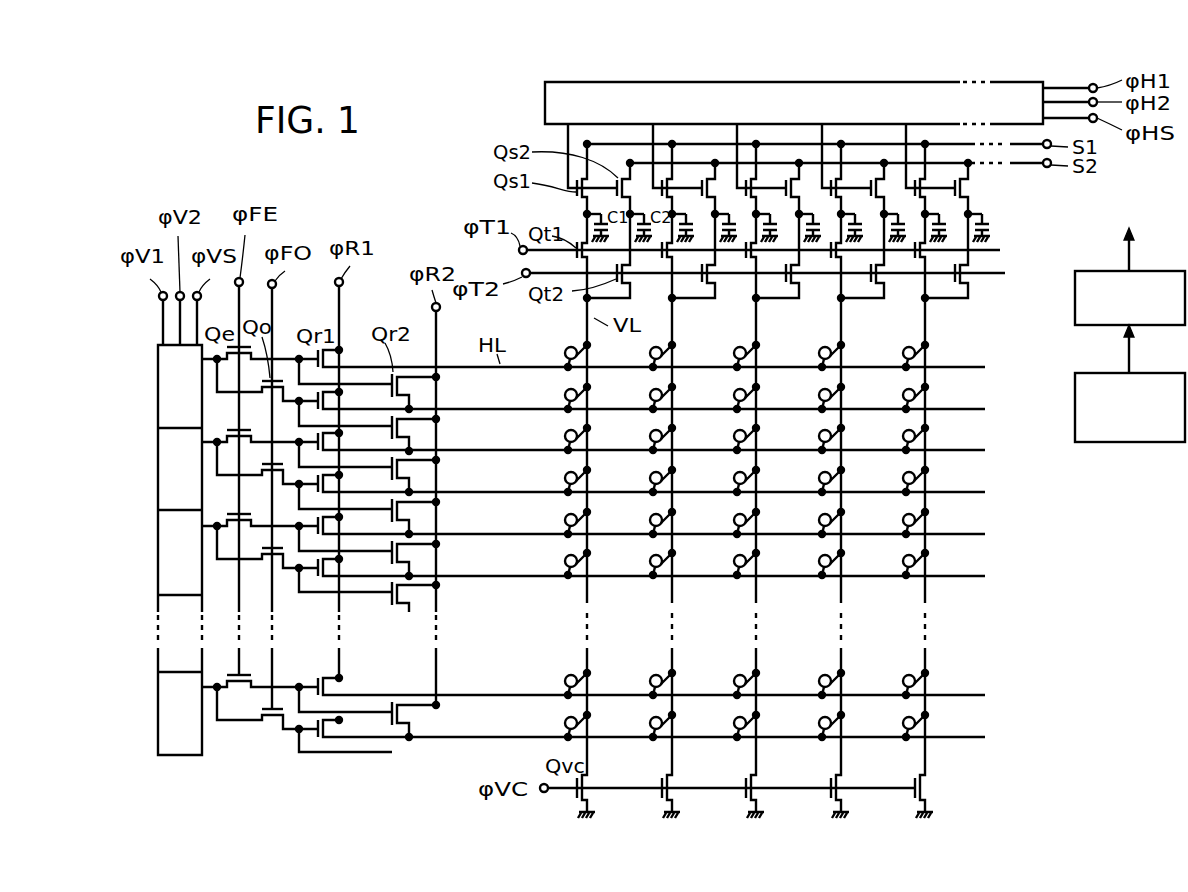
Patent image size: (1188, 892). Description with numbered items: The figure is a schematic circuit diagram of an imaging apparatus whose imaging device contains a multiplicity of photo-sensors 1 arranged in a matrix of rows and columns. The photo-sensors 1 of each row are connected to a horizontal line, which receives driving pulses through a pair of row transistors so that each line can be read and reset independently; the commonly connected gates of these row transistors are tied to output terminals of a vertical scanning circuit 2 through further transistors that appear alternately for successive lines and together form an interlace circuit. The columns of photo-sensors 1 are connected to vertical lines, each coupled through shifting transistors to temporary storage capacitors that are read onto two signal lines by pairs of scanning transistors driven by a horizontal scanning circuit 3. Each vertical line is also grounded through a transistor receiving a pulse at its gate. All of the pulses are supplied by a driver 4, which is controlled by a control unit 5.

The photo-sensor 1 is at (580, 342).
The vertical scanning circuit 2 is at (157, 464).
The horizontal scanning circuit 3 is at (545, 100).
The driver 4 is at (1075, 300).
The control unit 5 is at (1075, 398).